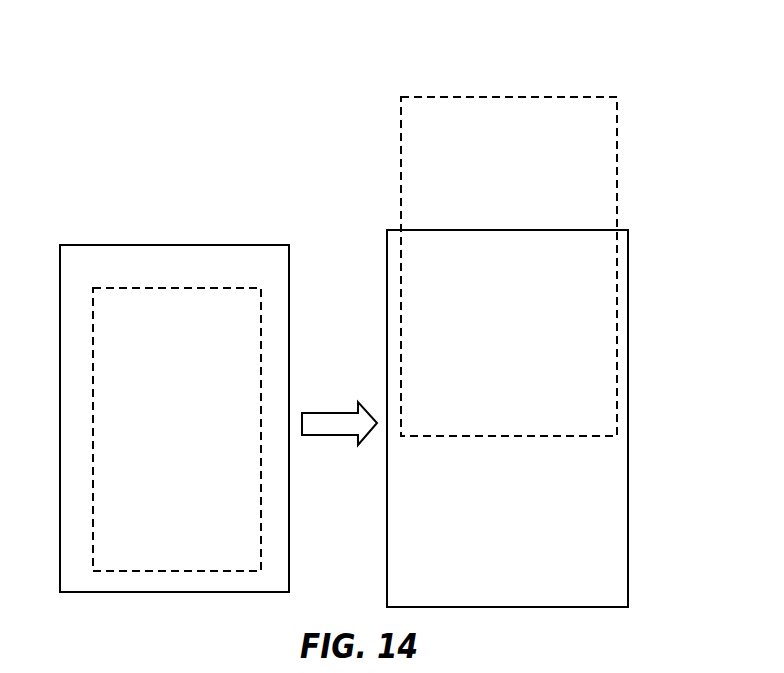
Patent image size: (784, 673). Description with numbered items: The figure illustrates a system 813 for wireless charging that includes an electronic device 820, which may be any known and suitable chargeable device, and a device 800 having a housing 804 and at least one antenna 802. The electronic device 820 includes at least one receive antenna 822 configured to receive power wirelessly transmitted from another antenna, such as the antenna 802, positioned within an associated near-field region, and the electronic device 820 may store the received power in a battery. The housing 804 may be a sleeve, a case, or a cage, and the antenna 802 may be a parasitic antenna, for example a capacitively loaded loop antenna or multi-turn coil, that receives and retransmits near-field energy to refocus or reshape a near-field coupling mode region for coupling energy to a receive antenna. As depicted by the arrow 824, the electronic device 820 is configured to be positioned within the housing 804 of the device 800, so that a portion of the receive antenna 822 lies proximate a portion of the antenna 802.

The system 813 is at (108, 57).
The electronic device 820 is at (131, 245).
The receive antenna 822 is at (94, 393).
The arrow 824 is at (330, 436).
The device 800 is at (627, 213).
The antenna 802 is at (543, 96).
The housing 804 is at (629, 490).